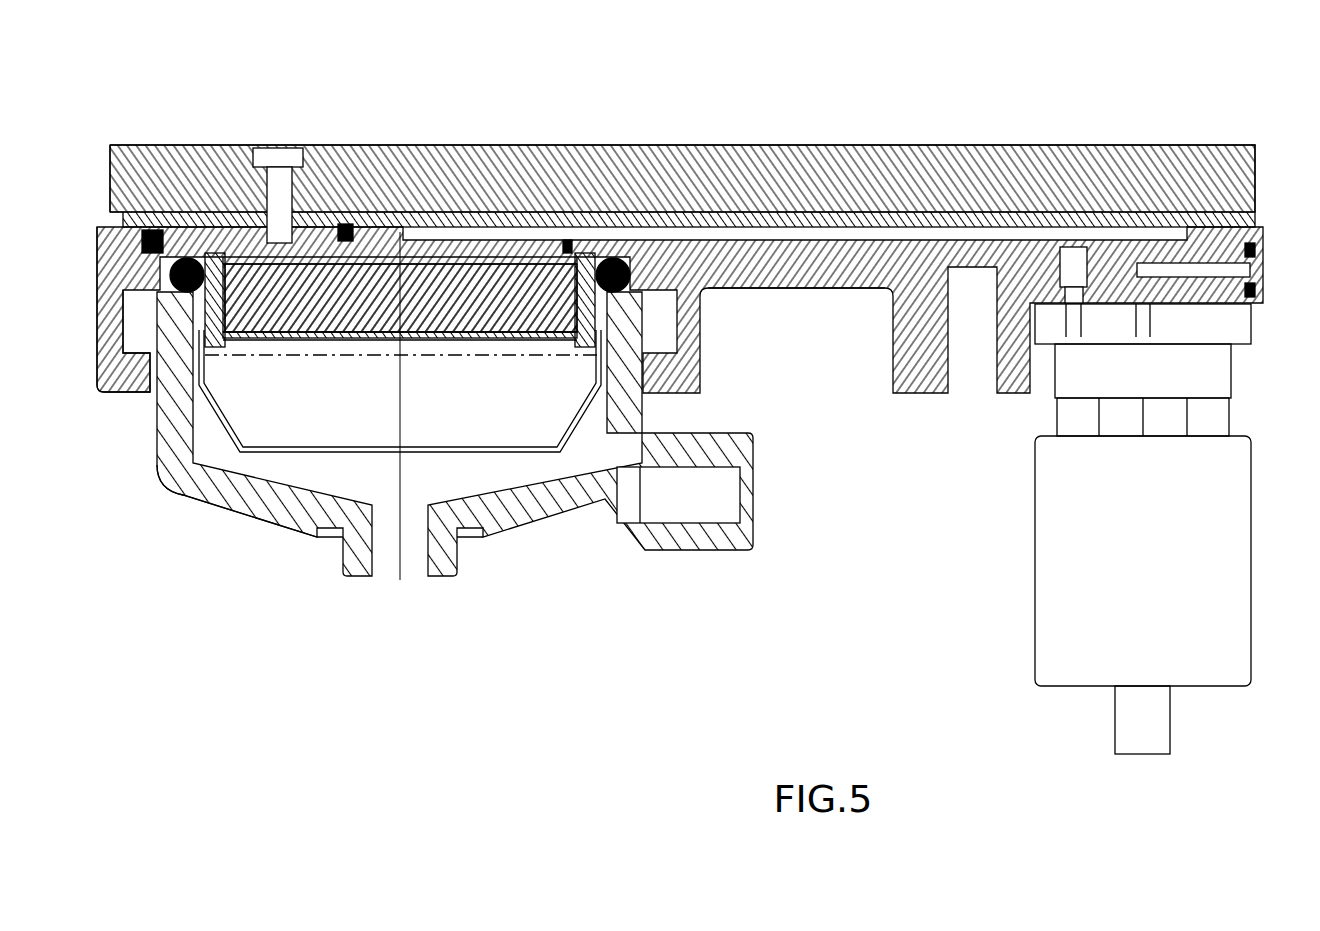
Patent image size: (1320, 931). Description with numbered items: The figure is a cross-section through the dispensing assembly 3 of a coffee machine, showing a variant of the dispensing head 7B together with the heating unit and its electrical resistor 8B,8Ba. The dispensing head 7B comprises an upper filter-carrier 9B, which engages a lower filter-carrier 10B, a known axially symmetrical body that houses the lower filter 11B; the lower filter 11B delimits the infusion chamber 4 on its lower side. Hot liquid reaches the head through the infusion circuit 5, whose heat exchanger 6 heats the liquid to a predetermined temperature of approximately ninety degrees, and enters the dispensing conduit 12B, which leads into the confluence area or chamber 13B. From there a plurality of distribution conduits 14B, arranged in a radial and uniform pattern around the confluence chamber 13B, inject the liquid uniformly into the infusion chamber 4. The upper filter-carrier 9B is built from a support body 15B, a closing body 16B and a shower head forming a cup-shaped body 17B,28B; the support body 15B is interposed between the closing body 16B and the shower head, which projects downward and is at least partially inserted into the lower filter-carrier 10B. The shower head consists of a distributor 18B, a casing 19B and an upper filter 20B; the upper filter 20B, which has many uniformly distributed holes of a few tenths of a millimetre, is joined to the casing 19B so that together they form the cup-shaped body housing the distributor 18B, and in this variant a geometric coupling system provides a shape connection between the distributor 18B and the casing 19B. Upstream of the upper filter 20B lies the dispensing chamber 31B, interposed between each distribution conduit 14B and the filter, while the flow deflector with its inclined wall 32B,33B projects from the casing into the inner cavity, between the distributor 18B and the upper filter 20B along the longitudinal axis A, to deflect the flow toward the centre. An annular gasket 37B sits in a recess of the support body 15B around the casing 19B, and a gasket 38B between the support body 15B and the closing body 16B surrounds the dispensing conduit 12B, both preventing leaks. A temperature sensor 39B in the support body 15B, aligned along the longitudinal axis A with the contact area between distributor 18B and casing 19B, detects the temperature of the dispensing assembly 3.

The dispensing head 7B is at (159, 126).
The heating unit / electrical resistor 8B,8Ba is at (137, 193).
The casing 19B is at (217, 252).
The distribution conduits 14B is at (270, 245).
The gasket 38B is at (345, 226).
The confluence area or chamber 13B is at (397, 252).
The temperature sensor 39B is at (566, 240).
The distributor 18B is at (592, 250).
The annular gasket 37B is at (637, 248).
The closing body 16B is at (797, 172).
The dispensing conduit 12B is at (885, 228).
The infusion circuit 5 is at (1134, 232).
The upper filter-carrier 9B is at (86, 380).
The shower head / cup-shaped body 17B,28B is at (287, 352).
The inclined wall 32B,33B is at (270, 330).
The infusion chamber 4 is at (362, 440).
The upper filter 20B is at (423, 342).
The dispensing chamber 31B is at (483, 342).
The lower filter 11B is at (500, 449).
The support body 15B is at (802, 290).
The lower filter-carrier 10B is at (520, 522).
The dispensing assembly 3 is at (233, 552).
The longitudinal axis A is at (397, 555).
The heat exchanger 6 is at (1268, 582).